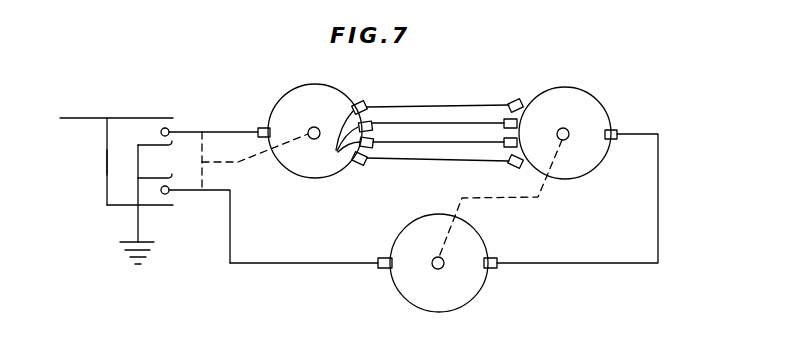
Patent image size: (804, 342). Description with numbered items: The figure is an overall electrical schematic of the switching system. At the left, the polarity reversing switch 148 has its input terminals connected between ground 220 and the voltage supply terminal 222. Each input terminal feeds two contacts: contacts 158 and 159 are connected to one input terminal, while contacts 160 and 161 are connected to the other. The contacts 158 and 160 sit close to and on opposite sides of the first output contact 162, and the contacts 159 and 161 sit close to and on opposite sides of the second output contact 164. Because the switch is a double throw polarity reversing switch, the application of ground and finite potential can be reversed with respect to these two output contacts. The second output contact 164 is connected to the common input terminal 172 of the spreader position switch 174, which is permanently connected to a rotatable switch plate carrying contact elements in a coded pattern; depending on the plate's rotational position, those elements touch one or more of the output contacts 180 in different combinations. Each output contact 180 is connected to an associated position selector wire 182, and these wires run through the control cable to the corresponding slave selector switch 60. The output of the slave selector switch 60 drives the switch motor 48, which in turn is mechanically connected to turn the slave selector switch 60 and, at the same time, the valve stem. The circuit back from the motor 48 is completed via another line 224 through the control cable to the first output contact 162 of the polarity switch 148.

The polarity reversing switch 148 is at (138, 165).
The input contact 159 is at (172, 118).
The input contact 158 is at (158, 207).
The second output contact 164 is at (170, 130).
The first output contact 162 is at (168, 194).
The input contact 161 is at (170, 148).
The input contact 160 is at (172, 176).
The voltage supply terminal 222 is at (107, 170).
The ground 220 is at (120, 242).
The spreader position switch 174 is at (338, 120).
The common input terminal 172 is at (300, 121).
The output contacts 180 is at (353, 160).
The position selector wires 182 is at (465, 159).
The slave selector switch 60 is at (567, 103).
The switch motor 48 is at (465, 283).
The line 224 is at (345, 264).